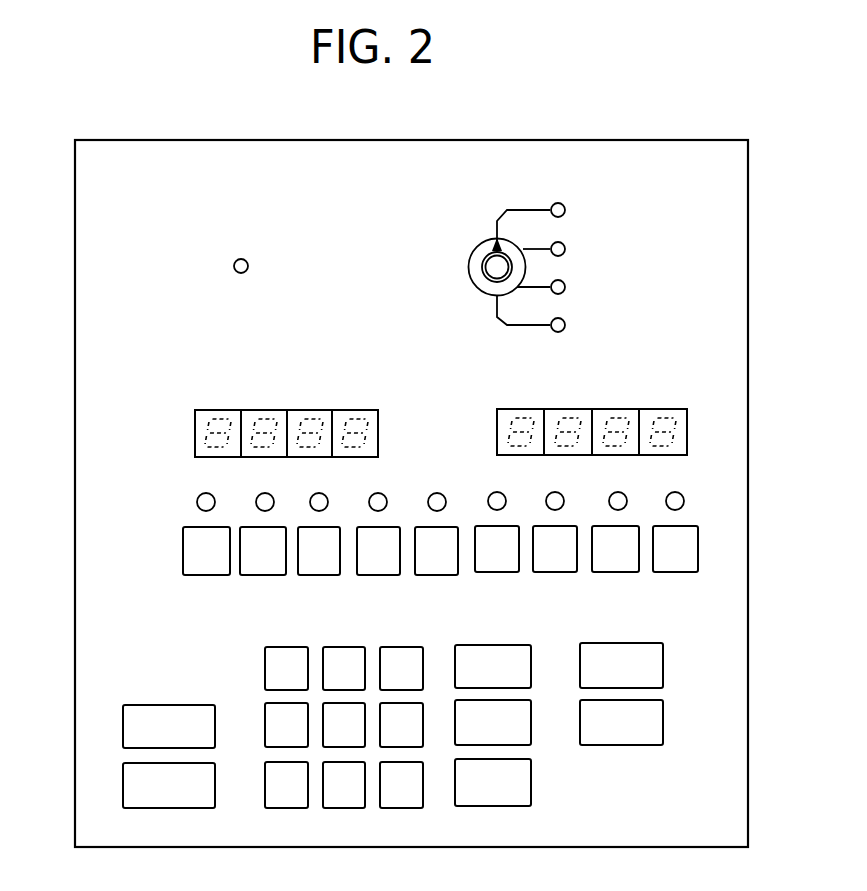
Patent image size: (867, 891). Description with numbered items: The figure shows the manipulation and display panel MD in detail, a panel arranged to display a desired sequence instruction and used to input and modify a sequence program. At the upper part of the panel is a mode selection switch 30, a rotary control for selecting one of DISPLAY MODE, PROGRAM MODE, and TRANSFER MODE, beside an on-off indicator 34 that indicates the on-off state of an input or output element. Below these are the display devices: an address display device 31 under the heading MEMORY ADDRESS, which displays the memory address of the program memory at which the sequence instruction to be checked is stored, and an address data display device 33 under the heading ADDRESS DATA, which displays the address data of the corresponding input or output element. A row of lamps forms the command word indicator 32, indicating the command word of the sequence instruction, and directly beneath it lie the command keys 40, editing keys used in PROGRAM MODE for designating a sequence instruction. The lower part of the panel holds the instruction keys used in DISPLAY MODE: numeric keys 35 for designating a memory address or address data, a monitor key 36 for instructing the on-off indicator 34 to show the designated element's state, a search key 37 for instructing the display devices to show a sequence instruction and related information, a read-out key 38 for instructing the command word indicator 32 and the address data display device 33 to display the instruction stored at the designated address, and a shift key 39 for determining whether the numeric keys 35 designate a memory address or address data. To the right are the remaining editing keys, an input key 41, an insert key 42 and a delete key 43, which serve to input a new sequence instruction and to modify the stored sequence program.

The manipulation and display panel MD is at (487, 139).
The mode selection switch 30 is at (472, 251).
The address display device 31 is at (355, 409).
The command word indicator 32 is at (260, 495).
The address data display device 33 is at (649, 408).
The on-off indicator 34 is at (246, 258).
The numeric keys 35 is at (413, 708).
The monitor key 36 is at (215, 716).
The search key 37 is at (215, 775).
The read-out key 38 is at (531, 712).
The shift key 39 is at (531, 770).
The command keys 40 is at (258, 572).
The input key 41 is at (517, 651).
The insert key 42 is at (655, 649).
The delete key 43 is at (661, 710).